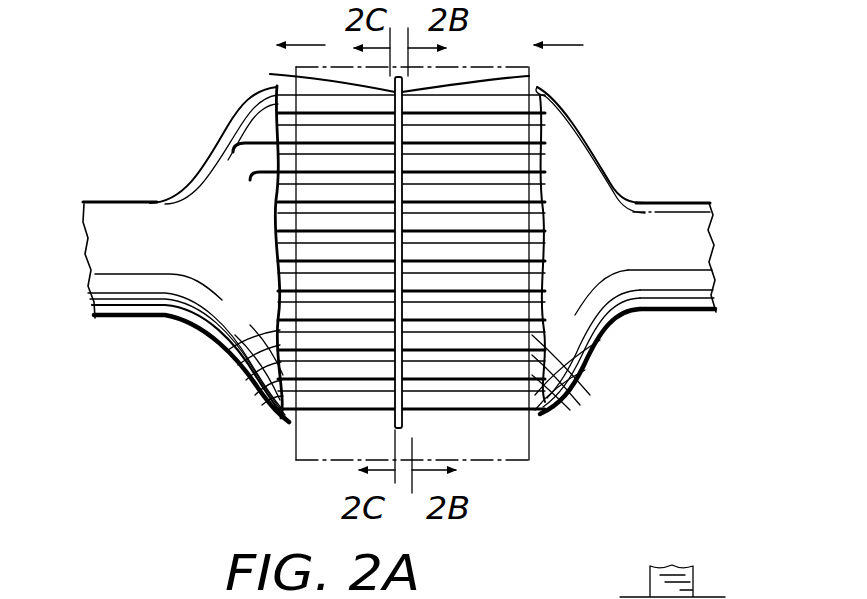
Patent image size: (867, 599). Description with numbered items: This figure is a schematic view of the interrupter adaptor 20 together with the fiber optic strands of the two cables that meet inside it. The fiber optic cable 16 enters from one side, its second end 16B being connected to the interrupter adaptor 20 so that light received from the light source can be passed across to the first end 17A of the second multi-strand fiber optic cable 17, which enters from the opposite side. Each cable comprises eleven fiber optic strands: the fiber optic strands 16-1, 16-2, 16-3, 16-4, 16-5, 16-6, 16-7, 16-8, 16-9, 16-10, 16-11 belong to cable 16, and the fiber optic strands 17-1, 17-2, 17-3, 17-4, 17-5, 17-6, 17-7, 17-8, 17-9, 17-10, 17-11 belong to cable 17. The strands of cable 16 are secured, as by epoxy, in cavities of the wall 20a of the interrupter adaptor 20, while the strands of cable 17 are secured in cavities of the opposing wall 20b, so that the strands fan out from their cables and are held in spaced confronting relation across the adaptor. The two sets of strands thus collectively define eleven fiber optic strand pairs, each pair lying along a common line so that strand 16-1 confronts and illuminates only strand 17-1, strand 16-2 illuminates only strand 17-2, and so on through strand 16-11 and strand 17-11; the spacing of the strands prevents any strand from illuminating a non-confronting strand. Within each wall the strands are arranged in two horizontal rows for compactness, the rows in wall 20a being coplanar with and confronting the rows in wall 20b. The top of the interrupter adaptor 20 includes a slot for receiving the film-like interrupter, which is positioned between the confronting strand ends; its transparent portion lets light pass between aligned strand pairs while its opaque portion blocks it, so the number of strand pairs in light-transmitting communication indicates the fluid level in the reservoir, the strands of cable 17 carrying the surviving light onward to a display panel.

The fiber optic cable 16 is at (690, 258).
The second multi-strand fiber optic cable 17 is at (140, 253).
The second end of the fiber optic cable 16B is at (616, 51).
The first end of the second multi-strand fiber optic cable 17A is at (122, 367).
The interrupter adaptor 20 is at (536, 446).
The wall 20a is at (529, 76).
The wall 20b is at (297, 86).
The fiber optic strand 16-1 is at (500, 103).
The fiber optic strand 16-2 is at (500, 133).
The fiber optic strand 16-3 is at (500, 162).
The fiber optic strand 16-4 is at (493, 192).
The fiber optic strand 16-5 is at (493, 221).
The fiber optic strand 16-6 is at (493, 251).
The fiber optic strand 16-7 is at (493, 281).
The fiber optic strand 16-8 is at (493, 310).
The fiber optic strand 16-9 is at (490, 340).
The fiber optic strand 16-10 is at (490, 369).
The fiber optic strand 16-11 is at (490, 399).
The fiber optic strand 17-1 is at (316, 103).
The fiber optic strand 17-2 is at (316, 133).
The fiber optic strand 17-3 is at (318, 162).
The fiber optic strand 17-4 is at (318, 192).
The fiber optic strand 17-5 is at (318, 221).
The fiber optic strand 17-6 is at (318, 251).
The fiber optic strand 17-7 is at (318, 281).
The fiber optic strand 17-8 is at (318, 310).
The fiber optic strand 17-9 is at (318, 340).
The fiber optic strand 17-10 is at (318, 369).
The fiber optic strand 17-11 is at (323, 400).